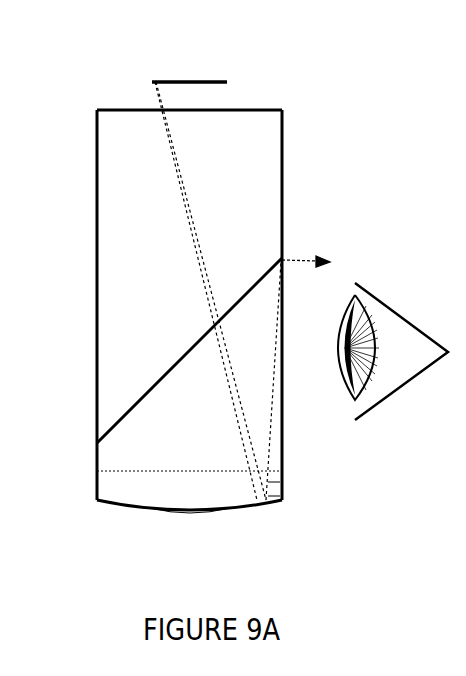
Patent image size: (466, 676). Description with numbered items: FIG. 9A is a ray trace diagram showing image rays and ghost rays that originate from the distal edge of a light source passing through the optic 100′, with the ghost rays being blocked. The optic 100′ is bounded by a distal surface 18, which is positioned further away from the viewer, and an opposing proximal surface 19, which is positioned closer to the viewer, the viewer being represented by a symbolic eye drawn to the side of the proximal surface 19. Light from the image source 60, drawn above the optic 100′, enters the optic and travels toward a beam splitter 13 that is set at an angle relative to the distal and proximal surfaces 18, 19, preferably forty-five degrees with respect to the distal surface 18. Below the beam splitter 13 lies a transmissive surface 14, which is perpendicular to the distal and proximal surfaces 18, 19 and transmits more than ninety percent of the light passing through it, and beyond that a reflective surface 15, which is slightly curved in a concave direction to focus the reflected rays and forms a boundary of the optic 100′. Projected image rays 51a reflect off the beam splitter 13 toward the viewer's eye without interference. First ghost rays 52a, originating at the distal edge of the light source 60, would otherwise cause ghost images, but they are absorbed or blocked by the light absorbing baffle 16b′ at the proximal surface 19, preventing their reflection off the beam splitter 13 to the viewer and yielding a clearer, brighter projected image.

The optic 100′ is at (288, 62).
The distal surface 18 is at (96, 155).
The proximal surface 19 is at (285, 160).
The image source 60 is at (181, 80).
The beam splitter 13 is at (150, 388).
The projected image rays 51a is at (293, 258).
The light absorbing baffle 16b′ is at (282, 455).
The first ghost rays 52a is at (278, 485).
The transmissive surface 14 is at (143, 471).
The reflective surface 15 is at (197, 512).